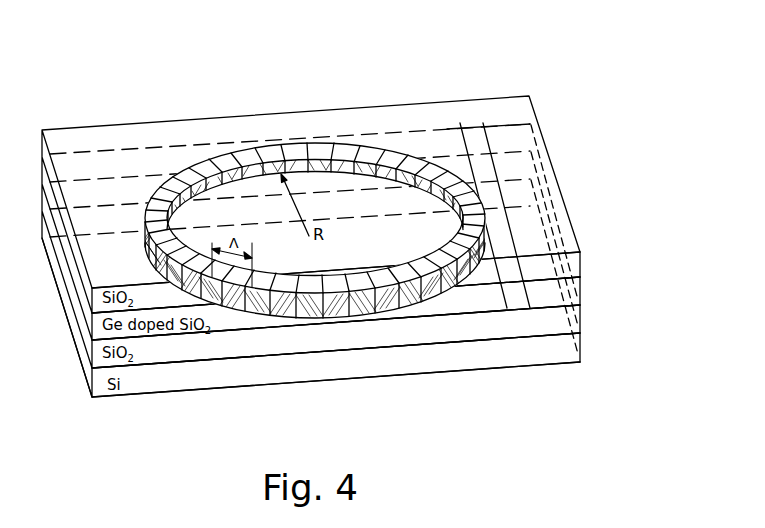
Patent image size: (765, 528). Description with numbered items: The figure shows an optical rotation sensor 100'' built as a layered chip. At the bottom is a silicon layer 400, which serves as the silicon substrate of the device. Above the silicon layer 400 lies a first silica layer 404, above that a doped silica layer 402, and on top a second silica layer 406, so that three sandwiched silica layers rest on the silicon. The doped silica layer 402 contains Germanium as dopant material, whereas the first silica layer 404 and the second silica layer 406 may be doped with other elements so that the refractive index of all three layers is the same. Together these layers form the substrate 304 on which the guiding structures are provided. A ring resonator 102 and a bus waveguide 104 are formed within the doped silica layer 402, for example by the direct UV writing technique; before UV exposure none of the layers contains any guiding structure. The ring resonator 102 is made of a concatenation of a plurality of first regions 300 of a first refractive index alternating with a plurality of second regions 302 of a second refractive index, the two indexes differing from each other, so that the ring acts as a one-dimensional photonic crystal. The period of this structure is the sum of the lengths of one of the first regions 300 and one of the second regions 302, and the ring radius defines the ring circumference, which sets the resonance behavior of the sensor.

The optical rotation sensor 100'' is at (352, 216).
The ring resonator 102 is at (223, 148).
The bus waveguide 104 is at (503, 225).
The first regions 300 is at (192, 167).
The second regions 302 is at (180, 173).
The substrate 304 is at (596, 305).
The silicon layer 400 is at (372, 363).
The doped silica layer 402 is at (462, 303).
The first silica layer 404 is at (273, 343).
The second silica layer 406 is at (160, 300).